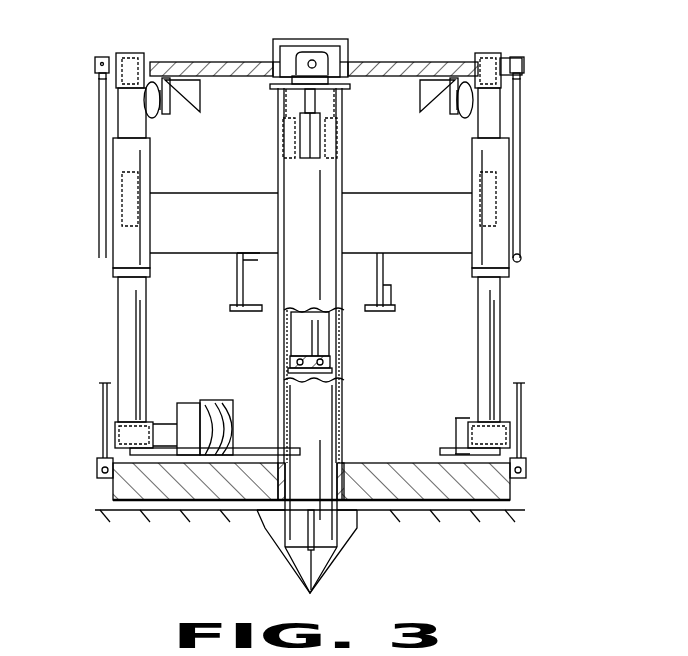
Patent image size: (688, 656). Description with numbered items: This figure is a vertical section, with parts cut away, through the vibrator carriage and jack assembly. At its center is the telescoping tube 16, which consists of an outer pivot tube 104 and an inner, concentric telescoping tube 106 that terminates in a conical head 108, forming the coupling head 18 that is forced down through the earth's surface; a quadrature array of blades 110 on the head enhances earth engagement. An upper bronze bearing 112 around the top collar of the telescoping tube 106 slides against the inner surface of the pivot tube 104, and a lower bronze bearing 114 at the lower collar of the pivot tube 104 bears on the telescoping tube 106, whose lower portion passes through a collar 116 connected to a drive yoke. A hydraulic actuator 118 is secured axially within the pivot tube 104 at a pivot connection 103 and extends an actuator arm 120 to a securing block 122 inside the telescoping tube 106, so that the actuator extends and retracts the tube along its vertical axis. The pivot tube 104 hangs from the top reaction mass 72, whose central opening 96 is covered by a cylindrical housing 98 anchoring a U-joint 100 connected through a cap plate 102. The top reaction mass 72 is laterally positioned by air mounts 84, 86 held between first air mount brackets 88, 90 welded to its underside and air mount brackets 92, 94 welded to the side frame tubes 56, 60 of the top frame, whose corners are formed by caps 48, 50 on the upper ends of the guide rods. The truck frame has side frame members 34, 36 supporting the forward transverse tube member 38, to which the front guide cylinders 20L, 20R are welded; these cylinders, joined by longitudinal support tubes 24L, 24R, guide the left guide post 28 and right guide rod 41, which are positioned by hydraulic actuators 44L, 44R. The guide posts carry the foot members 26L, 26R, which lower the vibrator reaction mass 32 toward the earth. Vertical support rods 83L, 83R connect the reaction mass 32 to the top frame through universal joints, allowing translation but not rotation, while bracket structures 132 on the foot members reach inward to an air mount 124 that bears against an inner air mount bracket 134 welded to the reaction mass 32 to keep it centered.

The telescoping tube 16 is at (320, 188).
The conical coupling head 18 is at (318, 572).
The left front guide cylinder 20L is at (128, 246).
The right front guide cylinder 20R is at (492, 246).
The left longitudinal support tube 24L is at (128, 206).
The right longitudinal support tube 24R is at (488, 200).
The left foot member 26L is at (115, 432).
The right foot member 26R is at (510, 432).
The left guide post 28 is at (120, 312).
The vibrator reaction mass 32 is at (215, 490).
The side frame member 34 is at (230, 300).
The side frame member 36 is at (395, 303).
The forward transverse tube member 38 is at (205, 240).
The right guide rod 41 is at (492, 318).
The left hydraulic actuator 44L is at (104, 152).
The right hydraulic actuator 44R is at (518, 148).
The cap 48 is at (133, 53).
The cap 50 is at (490, 53).
The structural member 56 is at (110, 76).
The structural member 60 is at (497, 62).
The top reaction mass 72 is at (415, 64).
The left vertical support rod 83L is at (103, 400).
The right vertical support rod 83R is at (522, 402).
The air mount 84 is at (152, 118).
The air mount 86 is at (462, 118).
The first air mount bracket 88 is at (184, 100).
The first air mount bracket 90 is at (440, 98).
The air mount bracket 92 is at (132, 96).
The air mount bracket 94 is at (488, 96).
The opening 96 is at (342, 70).
The cylindrical housing 98 is at (318, 40).
The U-joint 100 is at (315, 62).
The cap plate 102 is at (350, 80).
The pivot connection 103 is at (300, 100).
The outer pivot tube 104 is at (322, 226).
The inner telescoping tube 106 is at (320, 430).
The conical head 108 is at (300, 560).
The blades 110 is at (350, 535).
The upper bronze bearing 112 is at (284, 125).
The lower bronze bearing 114 is at (352, 480).
The collar 116 is at (345, 452).
The hydraulic actuator 118 is at (308, 140).
The actuator arm 120 is at (312, 356).
The securing block 122 is at (338, 362).
The air mount 124 is at (207, 400).
The bracket structure 132 is at (192, 403).
The inner air mount bracket 134 is at (232, 412).